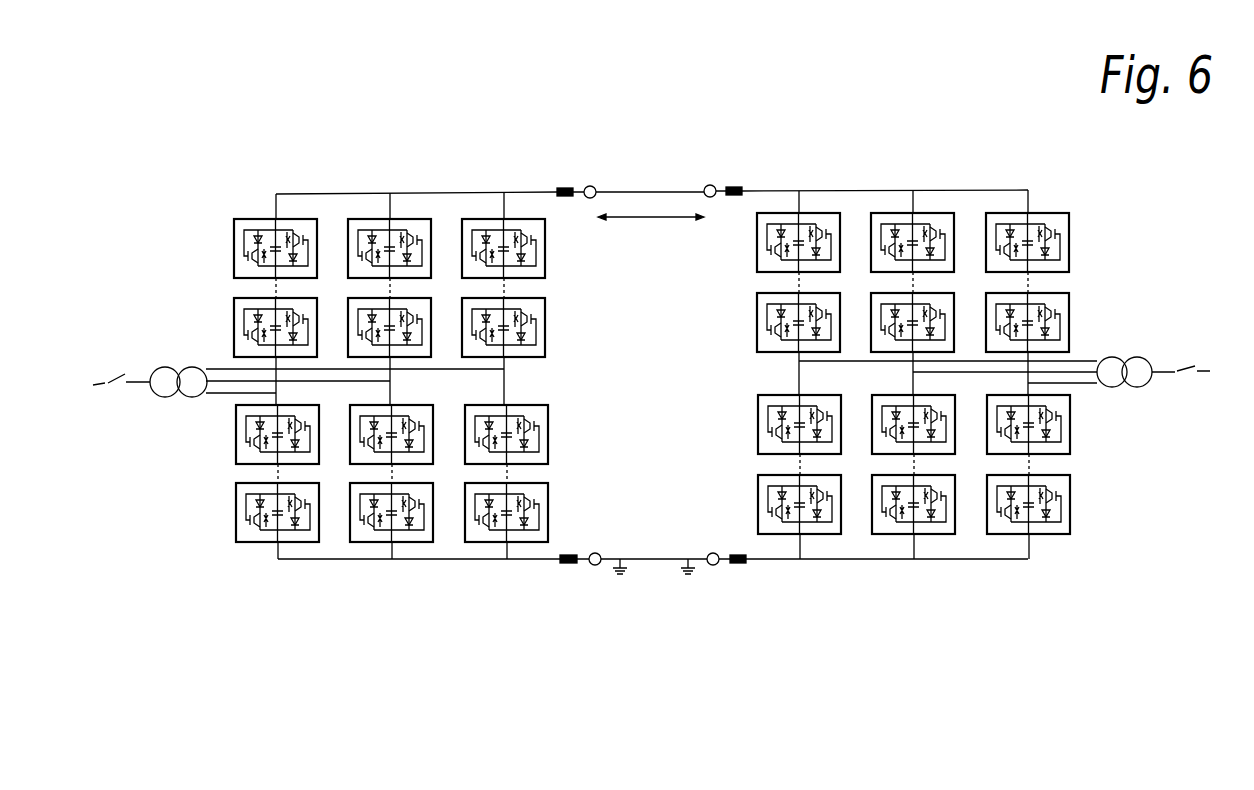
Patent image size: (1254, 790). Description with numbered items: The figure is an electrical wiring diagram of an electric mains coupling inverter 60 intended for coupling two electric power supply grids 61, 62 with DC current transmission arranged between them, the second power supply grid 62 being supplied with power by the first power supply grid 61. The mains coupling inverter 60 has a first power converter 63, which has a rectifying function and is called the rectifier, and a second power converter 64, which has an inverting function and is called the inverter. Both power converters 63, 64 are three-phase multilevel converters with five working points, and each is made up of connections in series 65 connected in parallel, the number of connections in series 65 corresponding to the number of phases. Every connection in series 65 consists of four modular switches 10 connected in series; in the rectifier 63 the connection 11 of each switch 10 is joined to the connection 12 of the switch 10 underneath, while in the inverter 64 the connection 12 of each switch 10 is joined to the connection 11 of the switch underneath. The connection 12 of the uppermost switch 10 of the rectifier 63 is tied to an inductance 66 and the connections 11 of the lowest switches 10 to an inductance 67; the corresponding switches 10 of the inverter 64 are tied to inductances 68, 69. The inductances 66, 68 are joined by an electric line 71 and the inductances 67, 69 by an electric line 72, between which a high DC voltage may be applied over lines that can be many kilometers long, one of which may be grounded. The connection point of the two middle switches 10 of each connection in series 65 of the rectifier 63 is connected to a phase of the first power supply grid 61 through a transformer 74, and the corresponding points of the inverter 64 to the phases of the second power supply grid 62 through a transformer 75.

The modular switch 10 is at (235, 327).
The connection 11 is at (474, 252).
The connection 12 is at (546, 237).
The electric mains coupling inverter 60 is at (1078, 608).
The first power supply grid 61 is at (143, 392).
The second power supply grid 62 is at (1172, 374).
The first power converter 63 is at (332, 448).
The second power converter 64 is at (1045, 565).
The connection in series 65 is at (300, 191).
The inductance 66 is at (572, 190).
The inductance 67 is at (578, 565).
The inductance 68 is at (742, 188).
The inductance 69 is at (743, 565).
The electric line 71 is at (676, 190).
The electric line 72 is at (660, 565).
The transformer 74 is at (200, 405).
The transformer 75 is at (1135, 383).